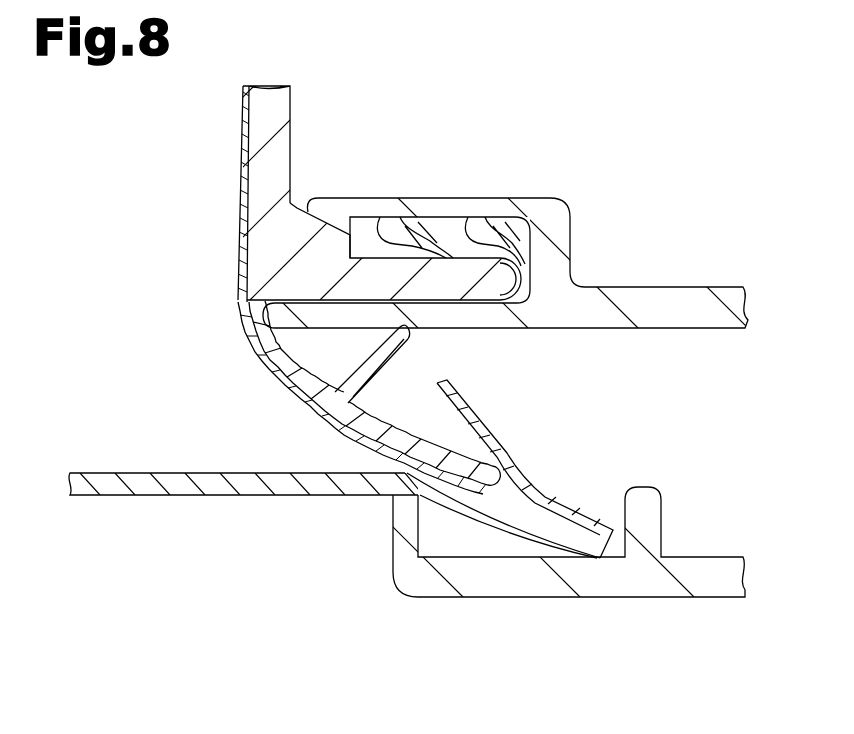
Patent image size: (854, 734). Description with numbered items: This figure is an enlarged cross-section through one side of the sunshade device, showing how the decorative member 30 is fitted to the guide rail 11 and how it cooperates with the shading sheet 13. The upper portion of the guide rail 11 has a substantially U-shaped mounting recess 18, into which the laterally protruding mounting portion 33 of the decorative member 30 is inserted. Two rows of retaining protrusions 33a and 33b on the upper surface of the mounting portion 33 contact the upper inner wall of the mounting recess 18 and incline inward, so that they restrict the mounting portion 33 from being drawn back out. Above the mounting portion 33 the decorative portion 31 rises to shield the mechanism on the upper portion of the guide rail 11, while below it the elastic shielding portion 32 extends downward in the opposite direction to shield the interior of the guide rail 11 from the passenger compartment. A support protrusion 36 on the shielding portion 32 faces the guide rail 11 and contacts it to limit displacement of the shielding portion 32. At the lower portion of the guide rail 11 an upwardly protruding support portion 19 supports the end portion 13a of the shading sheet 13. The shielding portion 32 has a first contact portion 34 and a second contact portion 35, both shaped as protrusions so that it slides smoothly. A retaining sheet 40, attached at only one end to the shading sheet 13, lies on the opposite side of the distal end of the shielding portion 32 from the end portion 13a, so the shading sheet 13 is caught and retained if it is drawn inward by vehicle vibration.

The guide rail 11 is at (675, 328).
The shading sheet 13 is at (210, 497).
The end portion 13a is at (533, 533).
The mounting recess 18 is at (473, 303).
The support portion 19 is at (394, 518).
The decorative member 30 is at (241, 147).
The decorative portion 31 is at (292, 100).
The shielding portion 32 is at (375, 412).
The mounting portion 33 is at (270, 252).
The retaining protrusion 33a is at (372, 216).
The retaining protrusion 33b is at (468, 217).
The first contact portion 34 is at (466, 500).
The second contact portion 35 is at (355, 455).
The support protrusion 36 is at (392, 358).
The retaining sheet 40 is at (478, 418).